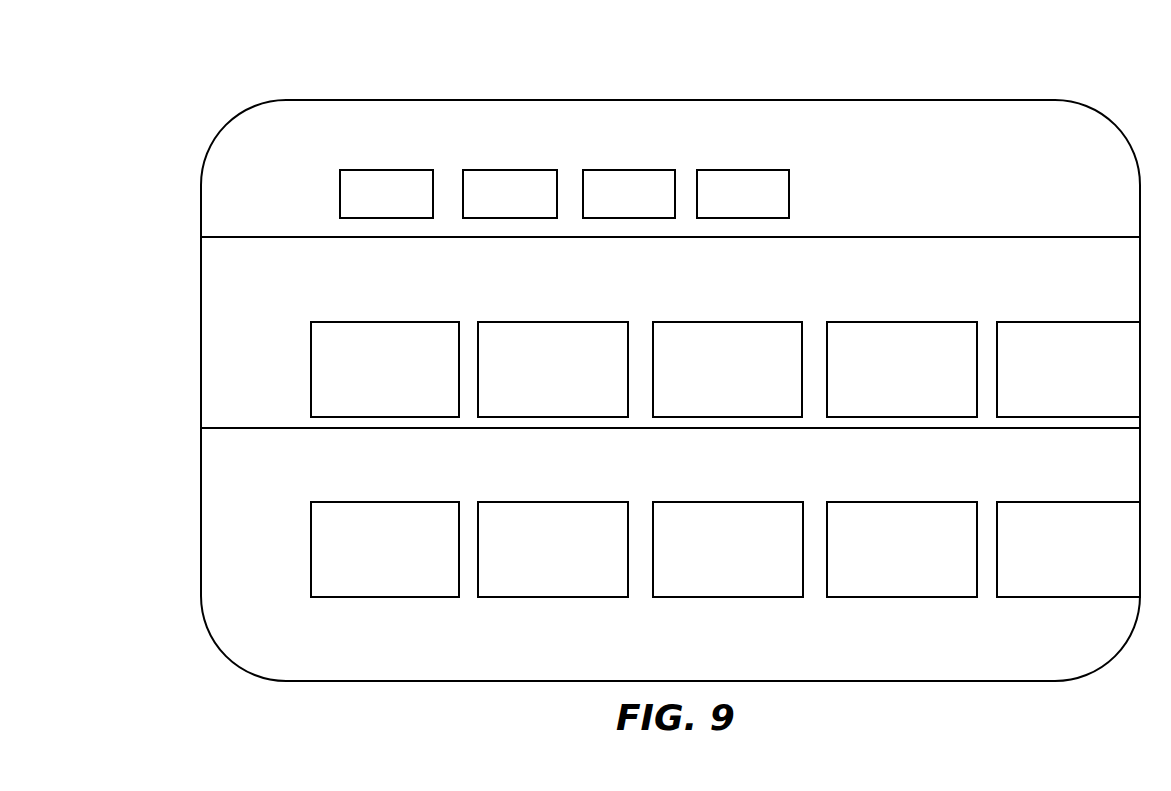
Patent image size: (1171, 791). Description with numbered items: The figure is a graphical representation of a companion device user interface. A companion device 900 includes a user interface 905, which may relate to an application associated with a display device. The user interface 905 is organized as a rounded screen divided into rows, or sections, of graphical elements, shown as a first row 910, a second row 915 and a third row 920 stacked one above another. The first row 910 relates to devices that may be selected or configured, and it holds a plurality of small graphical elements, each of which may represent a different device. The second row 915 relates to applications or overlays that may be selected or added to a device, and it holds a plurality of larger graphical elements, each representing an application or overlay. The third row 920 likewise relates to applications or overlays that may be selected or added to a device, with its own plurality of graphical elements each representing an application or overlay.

The companion device 900 is at (262, 79).
The user interface 905 is at (928, 136).
The row 910 is at (323, 190).
The row 915 is at (290, 322).
The row 920 is at (290, 502).